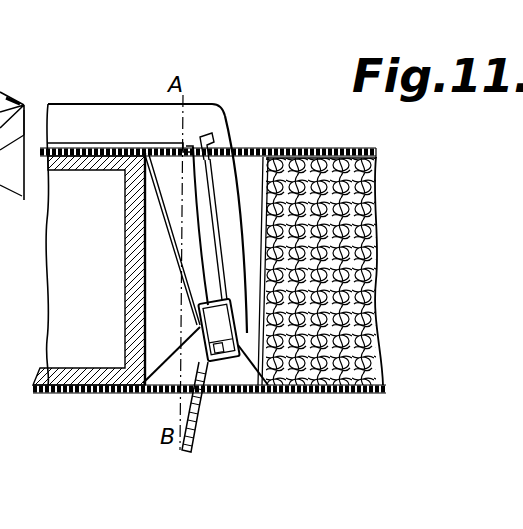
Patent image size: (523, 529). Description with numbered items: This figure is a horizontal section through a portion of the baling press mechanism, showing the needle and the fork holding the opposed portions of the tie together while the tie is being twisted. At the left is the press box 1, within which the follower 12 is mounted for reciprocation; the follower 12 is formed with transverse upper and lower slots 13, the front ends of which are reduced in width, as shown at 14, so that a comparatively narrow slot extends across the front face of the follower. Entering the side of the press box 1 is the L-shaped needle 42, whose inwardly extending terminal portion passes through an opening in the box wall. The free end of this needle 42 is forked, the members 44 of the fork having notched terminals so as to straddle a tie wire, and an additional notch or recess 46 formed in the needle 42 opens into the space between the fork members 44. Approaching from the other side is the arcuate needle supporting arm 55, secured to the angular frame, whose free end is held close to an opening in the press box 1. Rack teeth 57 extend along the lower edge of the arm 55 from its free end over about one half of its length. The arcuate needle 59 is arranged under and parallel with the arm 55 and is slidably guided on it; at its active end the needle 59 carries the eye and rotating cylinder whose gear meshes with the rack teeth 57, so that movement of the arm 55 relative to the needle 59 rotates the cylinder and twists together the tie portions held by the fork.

The press box 1 is at (107, 393).
The follower 12 is at (135, 197).
The transverse upper and lower slots 13 is at (243, 172).
The reduced front end of slot 14 is at (288, 393).
The L-shaped needle 42 is at (80, 113).
The fork members 44 is at (200, 325).
The notch or recess 46 is at (218, 298).
The arcuate needle supporting arm 55 is at (180, 233).
The rack teeth 57 is at (198, 440).
The arcuate needle 59 is at (213, 403).